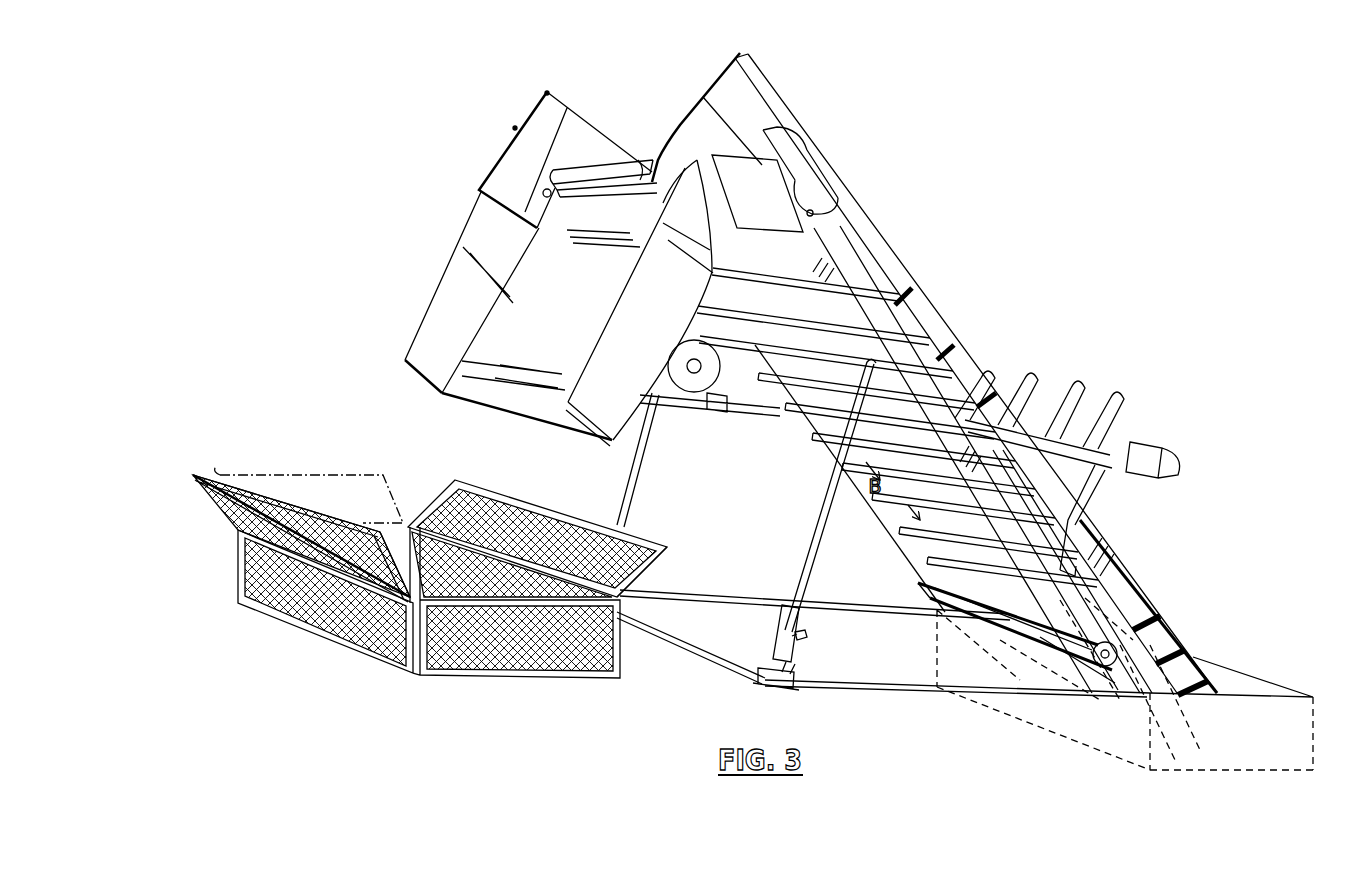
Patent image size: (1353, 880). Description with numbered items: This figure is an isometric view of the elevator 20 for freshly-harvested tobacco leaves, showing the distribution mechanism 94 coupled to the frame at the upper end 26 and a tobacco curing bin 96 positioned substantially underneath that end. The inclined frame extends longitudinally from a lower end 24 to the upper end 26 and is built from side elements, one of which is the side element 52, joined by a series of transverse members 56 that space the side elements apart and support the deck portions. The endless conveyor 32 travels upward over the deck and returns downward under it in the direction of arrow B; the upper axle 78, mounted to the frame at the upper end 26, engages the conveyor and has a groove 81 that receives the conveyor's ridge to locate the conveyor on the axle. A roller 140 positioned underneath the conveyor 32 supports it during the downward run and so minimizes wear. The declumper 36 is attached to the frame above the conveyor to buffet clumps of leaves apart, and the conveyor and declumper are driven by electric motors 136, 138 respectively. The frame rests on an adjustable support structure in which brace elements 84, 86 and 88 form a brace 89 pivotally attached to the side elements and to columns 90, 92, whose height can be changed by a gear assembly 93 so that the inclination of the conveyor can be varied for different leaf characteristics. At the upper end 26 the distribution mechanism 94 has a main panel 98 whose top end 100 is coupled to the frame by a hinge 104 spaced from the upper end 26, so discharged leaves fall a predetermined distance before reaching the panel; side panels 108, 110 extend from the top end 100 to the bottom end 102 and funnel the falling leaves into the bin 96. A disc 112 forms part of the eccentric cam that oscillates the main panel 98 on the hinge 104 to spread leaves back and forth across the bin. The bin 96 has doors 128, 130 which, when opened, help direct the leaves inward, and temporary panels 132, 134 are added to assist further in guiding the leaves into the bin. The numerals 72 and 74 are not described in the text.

The elevator 20 is at (1150, 586).
The lower end 24 is at (1190, 748).
The upper end 26 is at (690, 108).
The endless conveyor 32 is at (808, 636).
The declumper 36 is at (1086, 473).
The side element 52 is at (998, 514).
The transverse members 56 is at (928, 548).
The conveyor side rail 72 is at (946, 329).
The hood panel 74 is at (590, 124).
The upper axle 78 is at (620, 162).
The groove 81 is at (633, 160).
The brace element 84 is at (880, 690).
The brace element 86 is at (718, 657).
The brace element 88 is at (768, 596).
The brace 89 is at (688, 639).
The column 90 is at (815, 524).
The column 92 is at (628, 491).
The gear assembly 93 is at (776, 640).
The distribution mechanism 94 is at (570, 249).
The tobacco curing bin 96 is at (237, 566).
The main panel 98 is at (565, 316).
The top end 100 is at (543, 195).
The bottom end 102 is at (448, 398).
The hinge 104 is at (751, 226).
The side panel 108 is at (660, 338).
The side panel 110 is at (470, 334).
The disc 112 is at (682, 408).
The door 128 is at (509, 499).
The door 130 is at (208, 497).
The temporary panel 132 is at (656, 569).
The temporary panel 134 is at (342, 472).
The electric motor 136 is at (820, 168).
The electric motor 138 is at (1170, 456).
The roller 140 is at (912, 591).